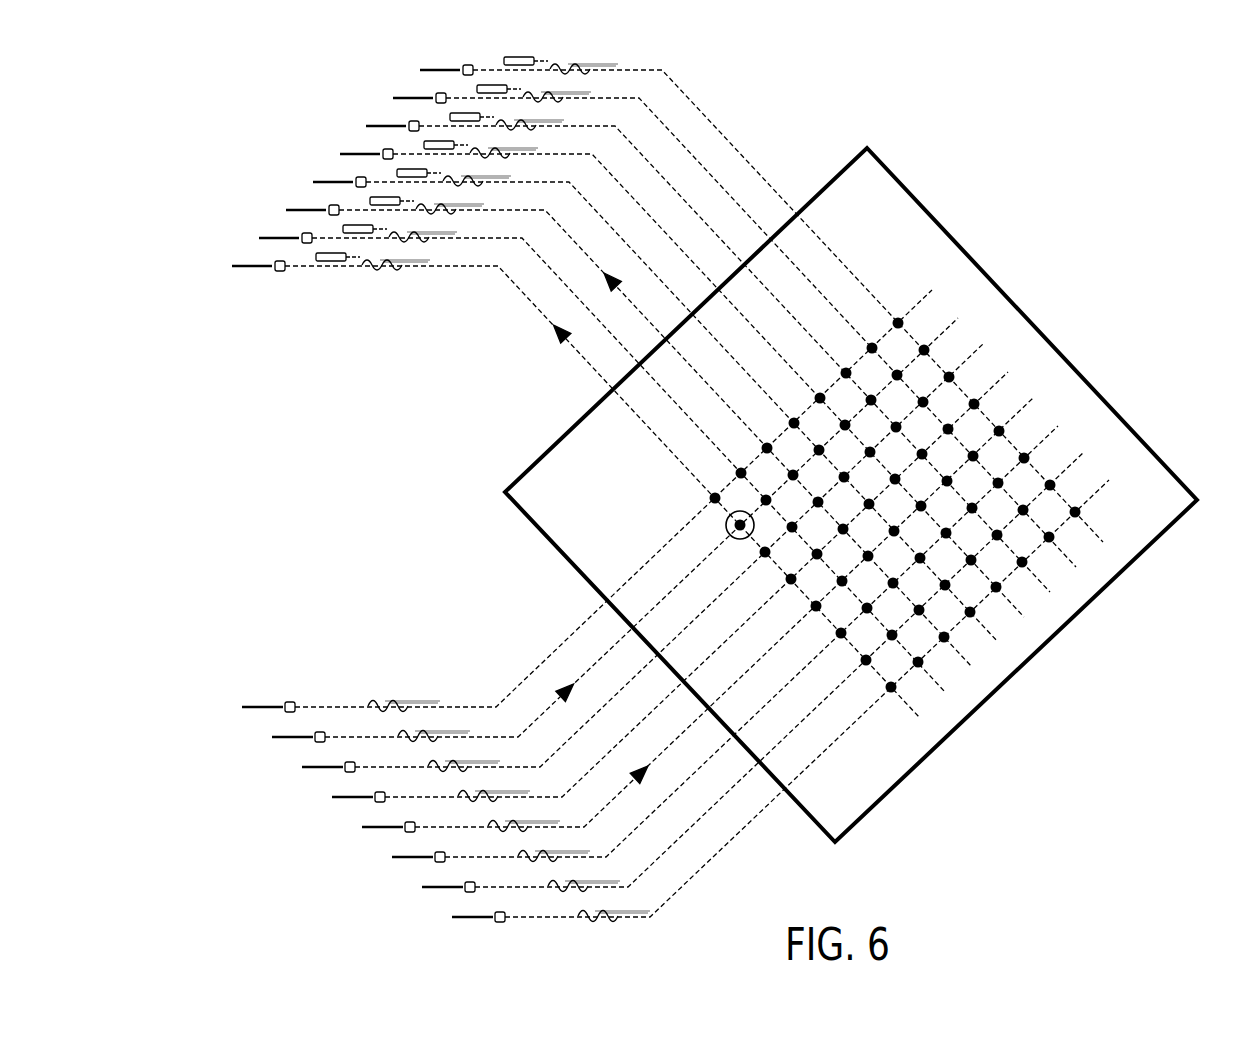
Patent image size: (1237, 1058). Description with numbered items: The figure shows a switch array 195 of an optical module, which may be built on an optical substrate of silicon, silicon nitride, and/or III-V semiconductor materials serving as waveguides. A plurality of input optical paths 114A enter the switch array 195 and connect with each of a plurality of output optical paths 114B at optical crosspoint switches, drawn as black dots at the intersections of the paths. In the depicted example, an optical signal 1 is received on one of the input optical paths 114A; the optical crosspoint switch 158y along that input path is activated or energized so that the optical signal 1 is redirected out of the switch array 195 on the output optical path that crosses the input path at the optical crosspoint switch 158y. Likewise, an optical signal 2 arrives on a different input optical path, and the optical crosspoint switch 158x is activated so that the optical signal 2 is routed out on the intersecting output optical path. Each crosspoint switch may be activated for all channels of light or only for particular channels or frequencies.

The output optical paths 114B is at (223, 45).
The input optical paths 114A is at (245, 697).
The switch array 195 is at (912, 192).
The optical crosspoint switch 158x is at (727, 521).
The optical crosspoint switch 158y is at (868, 556).
The optical signal 1 is at (633, 532).
The optical signal 2 is at (569, 518).